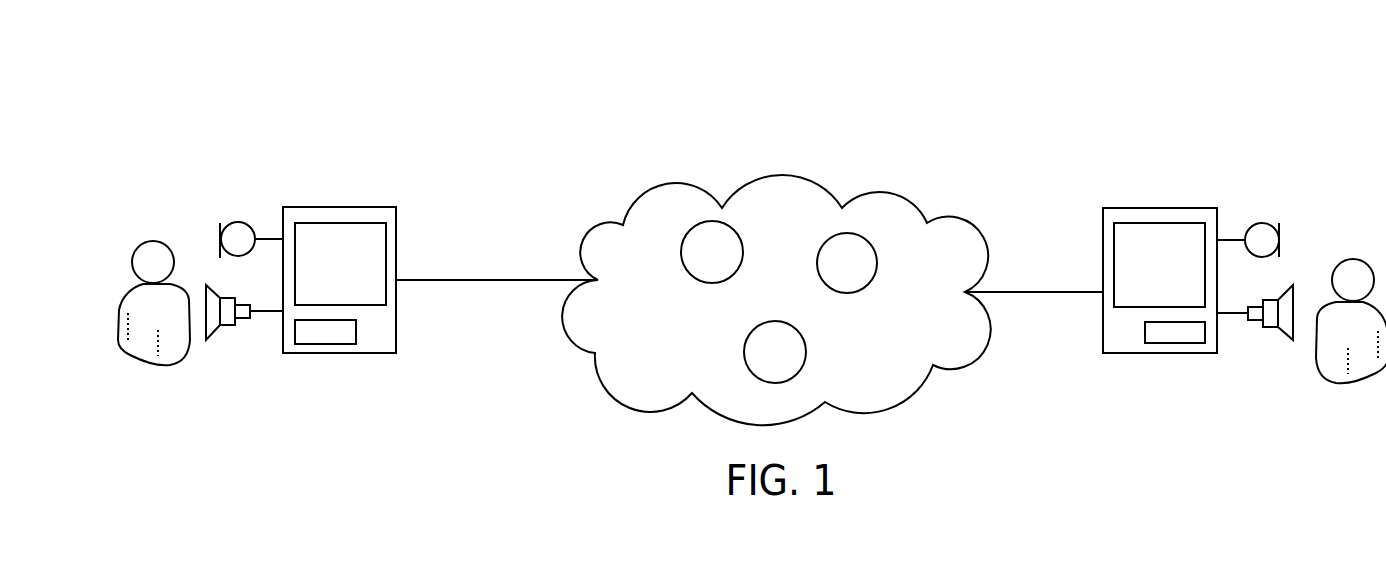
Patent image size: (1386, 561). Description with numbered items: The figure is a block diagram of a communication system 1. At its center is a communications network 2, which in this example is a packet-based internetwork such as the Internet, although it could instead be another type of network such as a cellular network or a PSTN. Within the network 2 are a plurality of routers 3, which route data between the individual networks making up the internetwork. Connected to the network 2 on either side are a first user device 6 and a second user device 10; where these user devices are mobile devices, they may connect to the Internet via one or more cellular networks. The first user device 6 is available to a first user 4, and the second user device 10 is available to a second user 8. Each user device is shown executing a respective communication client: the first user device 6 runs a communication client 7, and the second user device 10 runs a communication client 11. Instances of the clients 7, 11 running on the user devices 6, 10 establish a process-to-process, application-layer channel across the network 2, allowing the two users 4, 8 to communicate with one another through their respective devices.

The communication system 1 is at (85, 128).
The communications network 2 is at (797, 188).
The router 3 is at (779, 302).
The first user 4 is at (153, 241).
The first user device 6 is at (374, 348).
The communication client 7 is at (307, 333).
The second user 8 is at (1353, 259).
The second user device 10 is at (1127, 350).
The communication client 11 is at (1188, 337).